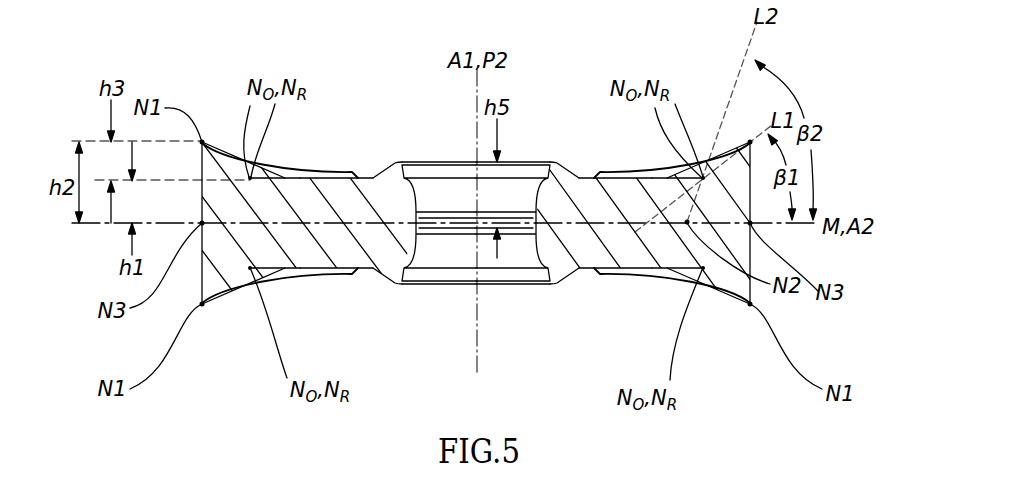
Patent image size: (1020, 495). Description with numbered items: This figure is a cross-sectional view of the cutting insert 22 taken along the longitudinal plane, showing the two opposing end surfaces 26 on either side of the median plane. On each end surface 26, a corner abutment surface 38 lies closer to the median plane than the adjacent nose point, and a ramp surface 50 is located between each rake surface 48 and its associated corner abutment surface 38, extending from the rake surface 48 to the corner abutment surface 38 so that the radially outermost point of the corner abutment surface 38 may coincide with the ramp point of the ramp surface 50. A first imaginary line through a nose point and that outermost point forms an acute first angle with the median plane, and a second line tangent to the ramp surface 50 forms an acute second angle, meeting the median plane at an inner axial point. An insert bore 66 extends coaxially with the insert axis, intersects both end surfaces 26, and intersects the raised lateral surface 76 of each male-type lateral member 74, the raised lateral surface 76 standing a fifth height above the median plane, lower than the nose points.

The cutting insert 22 is at (530, 117).
The end surface 26 is at (370, 166).
The corner abutment surface 38 is at (280, 177).
The rake surface 48 is at (202, 142).
The ramp surface 50 is at (225, 139).
The insert bore 66 is at (450, 186).
The lateral member 74 is at (390, 152).
The raised lateral surface 76 is at (556, 160).